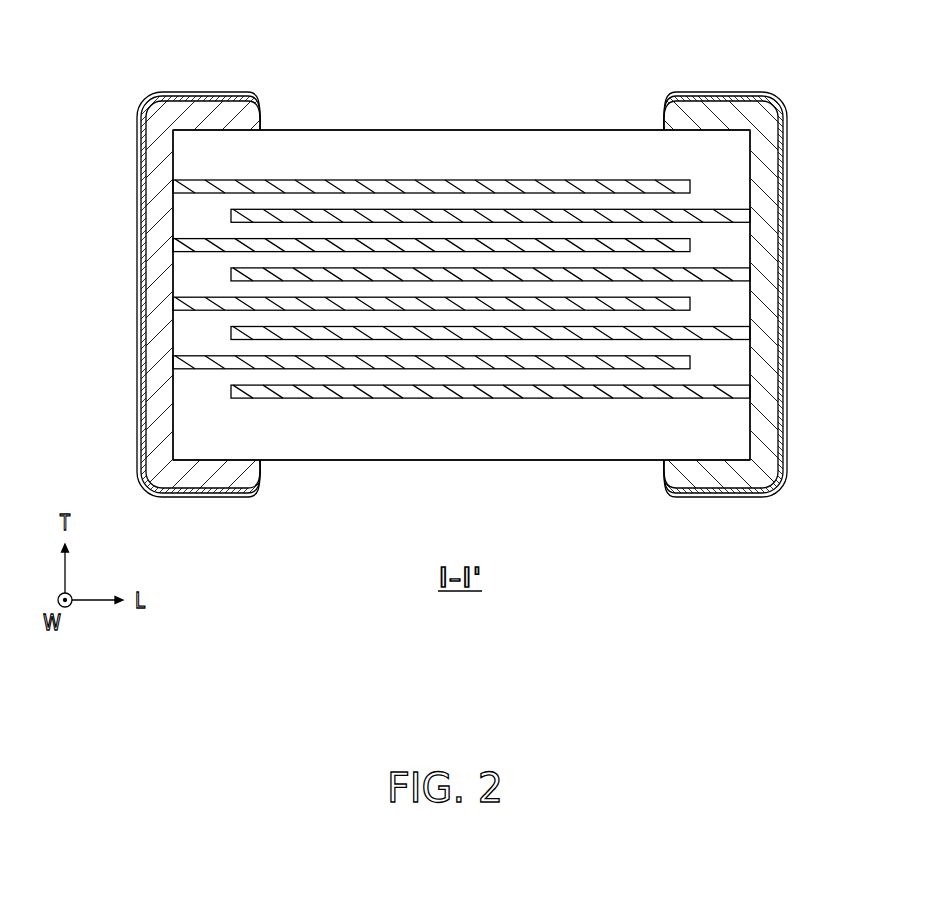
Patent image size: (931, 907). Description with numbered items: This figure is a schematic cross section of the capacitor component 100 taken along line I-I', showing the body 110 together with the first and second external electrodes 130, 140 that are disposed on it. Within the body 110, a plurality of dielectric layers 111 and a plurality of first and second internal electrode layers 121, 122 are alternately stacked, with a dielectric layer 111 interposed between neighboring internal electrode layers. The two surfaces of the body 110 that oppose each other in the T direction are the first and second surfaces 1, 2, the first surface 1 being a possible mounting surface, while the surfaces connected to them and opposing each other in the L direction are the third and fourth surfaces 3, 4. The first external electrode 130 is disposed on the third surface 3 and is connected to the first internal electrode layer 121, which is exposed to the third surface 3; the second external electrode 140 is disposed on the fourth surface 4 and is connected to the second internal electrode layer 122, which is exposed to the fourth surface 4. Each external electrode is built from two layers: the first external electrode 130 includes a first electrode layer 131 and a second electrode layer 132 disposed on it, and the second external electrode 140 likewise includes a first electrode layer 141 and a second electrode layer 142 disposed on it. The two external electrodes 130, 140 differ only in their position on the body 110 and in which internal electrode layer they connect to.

The capacitor component 100 is at (431, 22).
The body 110 is at (548, 126).
The dielectric layer 111 is at (449, 197).
The first internal electrode layer 121 is at (511, 185).
The second internal electrode layer 122 is at (620, 212).
The first surface 1 is at (312, 462).
The second surface 2 is at (312, 128).
The third surface 3 is at (172, 405).
The fourth surface 4 is at (752, 407).
The first external electrode 130 is at (140, 551).
The first electrode layer 131 is at (205, 478).
The second electrode layer 132 is at (172, 500).
The second external electrode 140 is at (782, 551).
The first electrode layer 141 is at (718, 478).
The second electrode layer 142 is at (752, 500).